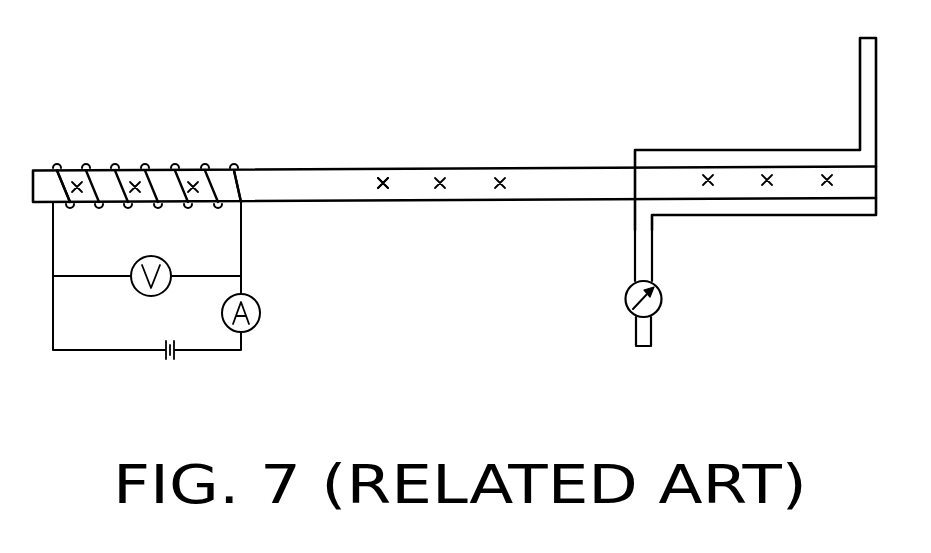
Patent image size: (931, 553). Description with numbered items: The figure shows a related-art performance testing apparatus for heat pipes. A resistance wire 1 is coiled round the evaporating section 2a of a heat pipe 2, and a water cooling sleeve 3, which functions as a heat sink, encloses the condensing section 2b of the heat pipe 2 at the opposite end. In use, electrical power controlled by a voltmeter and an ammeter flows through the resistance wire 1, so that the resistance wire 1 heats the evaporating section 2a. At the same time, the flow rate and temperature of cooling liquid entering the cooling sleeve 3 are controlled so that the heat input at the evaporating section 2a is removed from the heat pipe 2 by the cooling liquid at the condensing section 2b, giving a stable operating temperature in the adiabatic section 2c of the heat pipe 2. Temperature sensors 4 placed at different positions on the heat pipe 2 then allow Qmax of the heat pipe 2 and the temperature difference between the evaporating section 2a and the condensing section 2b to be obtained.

The resistance wire 1 is at (173, 170).
The heat pipe 2 is at (288, 170).
The evaporating section 2a is at (103, 172).
The condensing section 2b is at (693, 178).
The adiabatic section 2c is at (472, 183).
The water cooling sleeve 3 is at (795, 150).
The temperature sensors 4 is at (385, 170).